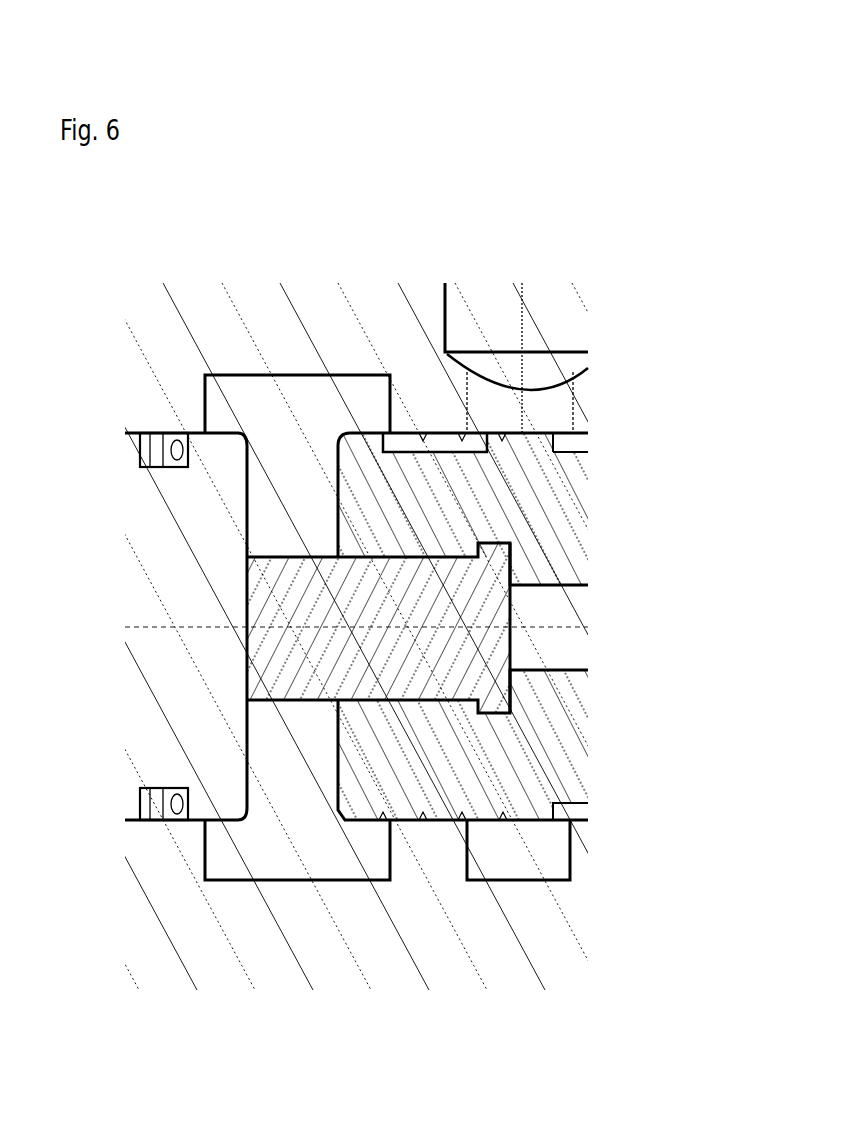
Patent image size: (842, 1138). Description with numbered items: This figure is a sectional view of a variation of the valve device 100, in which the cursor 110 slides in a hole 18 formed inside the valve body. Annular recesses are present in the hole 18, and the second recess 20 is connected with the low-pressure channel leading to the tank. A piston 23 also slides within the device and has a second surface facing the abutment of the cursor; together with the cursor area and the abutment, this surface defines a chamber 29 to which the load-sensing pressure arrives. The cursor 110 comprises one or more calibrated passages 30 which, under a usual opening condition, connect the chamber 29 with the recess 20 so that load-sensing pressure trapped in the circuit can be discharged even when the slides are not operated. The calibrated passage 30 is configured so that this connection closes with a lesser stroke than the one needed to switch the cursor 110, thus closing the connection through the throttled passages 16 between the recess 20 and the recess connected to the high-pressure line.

The valve device 100 is at (549, 245).
The chamber 29 is at (290, 463).
The hole 18 is at (455, 433).
The throttled passages 16 is at (567, 838).
The piston 23 is at (290, 615).
The calibrated passage 30 is at (393, 433).
The cursor 110 is at (523, 460).
The second recess 20 is at (502, 838).